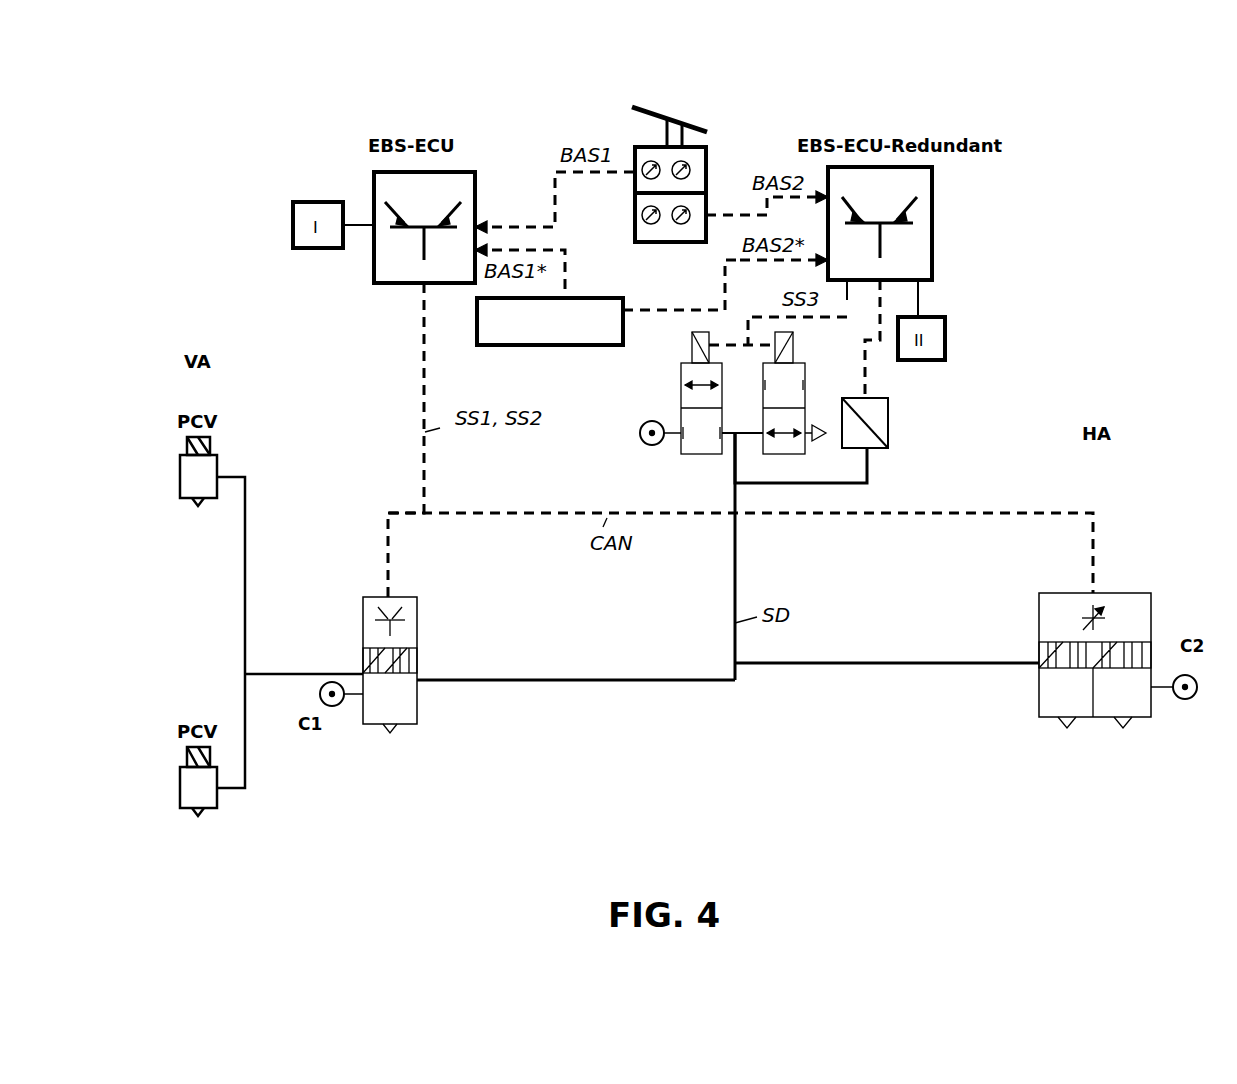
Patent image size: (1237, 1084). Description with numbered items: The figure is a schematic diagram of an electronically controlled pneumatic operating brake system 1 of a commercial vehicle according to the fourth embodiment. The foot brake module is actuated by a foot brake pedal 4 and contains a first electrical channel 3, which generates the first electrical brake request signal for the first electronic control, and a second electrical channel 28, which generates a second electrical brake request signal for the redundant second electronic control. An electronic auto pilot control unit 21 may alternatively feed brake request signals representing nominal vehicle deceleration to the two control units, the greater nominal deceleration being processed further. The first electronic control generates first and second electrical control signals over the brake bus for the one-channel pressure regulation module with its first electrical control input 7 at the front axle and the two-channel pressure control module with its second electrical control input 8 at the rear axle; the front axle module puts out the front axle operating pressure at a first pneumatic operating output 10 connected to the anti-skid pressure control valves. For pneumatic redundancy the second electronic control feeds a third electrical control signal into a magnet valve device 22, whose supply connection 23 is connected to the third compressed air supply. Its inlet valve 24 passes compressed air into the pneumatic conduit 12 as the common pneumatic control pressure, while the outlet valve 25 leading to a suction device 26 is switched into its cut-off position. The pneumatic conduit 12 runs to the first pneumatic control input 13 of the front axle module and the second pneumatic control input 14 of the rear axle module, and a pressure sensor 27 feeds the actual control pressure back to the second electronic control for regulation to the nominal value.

The electronically controlled pneumatic operating brake system 1 is at (1188, 133).
The first electrical channel 3 is at (703, 195).
The foot brake pedal 4 is at (645, 108).
The first electrical control input 7 is at (374, 673).
The second electrical control input 8 is at (1073, 671).
The first pneumatic operating output 10 is at (363, 670).
The pneumatic conduit 12 is at (735, 562).
The first pneumatic control input 13 is at (423, 678).
The second pneumatic control input 14 is at (1040, 658).
The electronic auto pilot control unit 21 is at (588, 306).
The magnet valve device 22 is at (724, 422).
The supply connection 23 is at (680, 437).
The inlet valve 24 is at (700, 443).
The outlet valve 25 is at (788, 443).
The suction device 26 is at (825, 440).
The pressure sensor 27 is at (882, 427).
The second electrical channel 28 is at (672, 230).